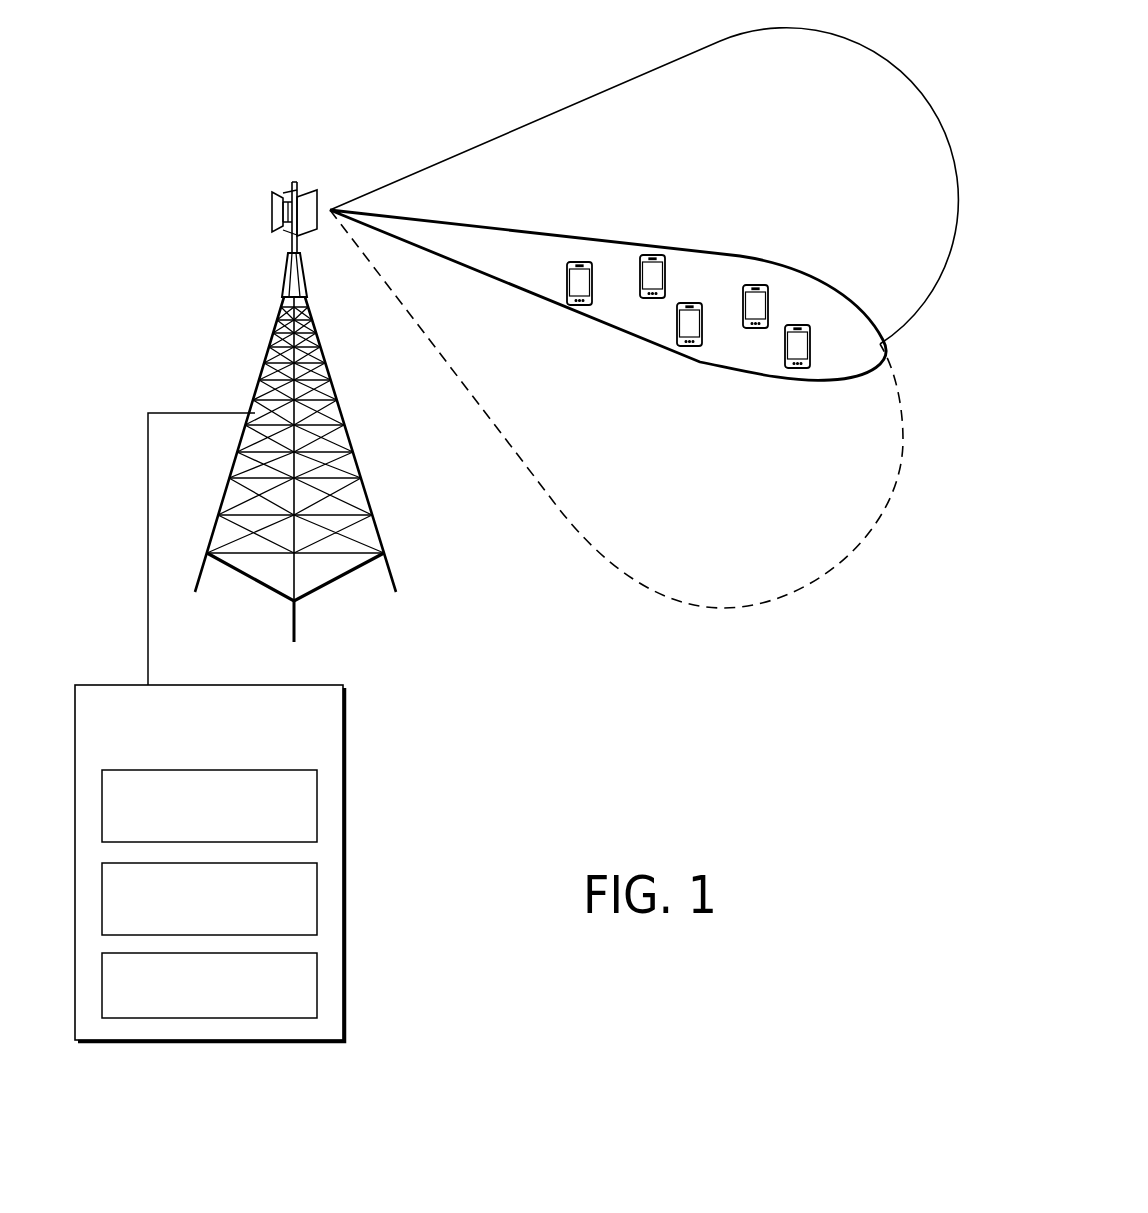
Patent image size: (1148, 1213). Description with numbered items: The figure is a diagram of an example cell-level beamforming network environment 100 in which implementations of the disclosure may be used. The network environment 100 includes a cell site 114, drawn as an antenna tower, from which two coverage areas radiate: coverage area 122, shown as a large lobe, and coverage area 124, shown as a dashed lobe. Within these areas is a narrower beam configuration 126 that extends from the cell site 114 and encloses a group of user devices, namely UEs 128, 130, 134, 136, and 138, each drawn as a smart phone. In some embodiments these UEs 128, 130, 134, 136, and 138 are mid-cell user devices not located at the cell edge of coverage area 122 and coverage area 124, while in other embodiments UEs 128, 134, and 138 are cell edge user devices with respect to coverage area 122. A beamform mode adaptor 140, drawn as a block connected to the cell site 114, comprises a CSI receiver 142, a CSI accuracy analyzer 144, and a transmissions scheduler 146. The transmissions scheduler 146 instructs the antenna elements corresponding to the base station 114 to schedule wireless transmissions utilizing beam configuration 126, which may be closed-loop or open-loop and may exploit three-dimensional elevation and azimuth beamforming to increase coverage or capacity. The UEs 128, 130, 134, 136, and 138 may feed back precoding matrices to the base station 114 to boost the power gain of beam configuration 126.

The cell-level beamforming network environment 100 is at (92, 77).
The cell site 114 is at (288, 266).
The coverage area 122 is at (658, 67).
The coverage area 124 is at (548, 496).
The beam configuration 126 is at (550, 232).
The user device (UE) 128 is at (797, 369).
The user device (UE) 130 is at (755, 329).
The user device (UE) 134 is at (690, 347).
The user device (UE) 136 is at (653, 299).
The user device (UE) 138 is at (579, 306).
The beamform mode adaptor 140 is at (347, 718).
The CSI receiver 142 is at (318, 803).
The CSI accuracy analyzer 144 is at (318, 898).
The transmissions scheduler 146 is at (318, 977).